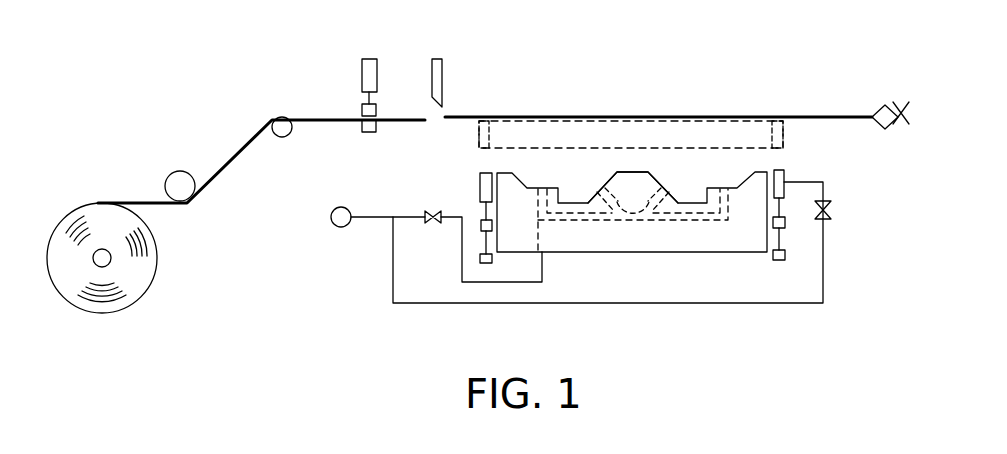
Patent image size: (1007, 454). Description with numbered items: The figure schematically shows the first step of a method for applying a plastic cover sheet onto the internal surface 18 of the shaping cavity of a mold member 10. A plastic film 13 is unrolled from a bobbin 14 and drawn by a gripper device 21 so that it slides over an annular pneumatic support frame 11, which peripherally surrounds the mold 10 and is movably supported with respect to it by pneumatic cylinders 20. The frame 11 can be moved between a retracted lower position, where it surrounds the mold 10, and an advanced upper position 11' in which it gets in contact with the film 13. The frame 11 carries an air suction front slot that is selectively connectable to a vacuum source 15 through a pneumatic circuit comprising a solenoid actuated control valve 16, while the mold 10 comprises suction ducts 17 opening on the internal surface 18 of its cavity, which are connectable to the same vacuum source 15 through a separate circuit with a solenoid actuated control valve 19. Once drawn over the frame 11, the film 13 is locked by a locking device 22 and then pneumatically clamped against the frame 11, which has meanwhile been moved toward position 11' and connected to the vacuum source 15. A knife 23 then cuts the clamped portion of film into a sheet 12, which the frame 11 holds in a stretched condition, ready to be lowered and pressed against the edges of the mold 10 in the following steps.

The mold member 10 is at (715, 238).
The support frame 11 is at (807, 163).
The advanced or upper position of the frame 11' is at (787, 74).
The sheet 12 is at (558, 118).
The plastic film 13 is at (229, 162).
The bobbin 14 is at (78, 238).
The vacuum source 15 is at (340, 222).
The solenoid actuated control valve 16 is at (827, 208).
The suction ducts 17 is at (588, 230).
The internal surface of the shaping cavity 18 is at (693, 203).
The solenoid actuated control valve 19 is at (430, 215).
The pneumatic cylinders 20 is at (482, 245).
The gripper device 21 is at (886, 67).
The locking device 22 is at (363, 108).
The knife 23 is at (433, 77).